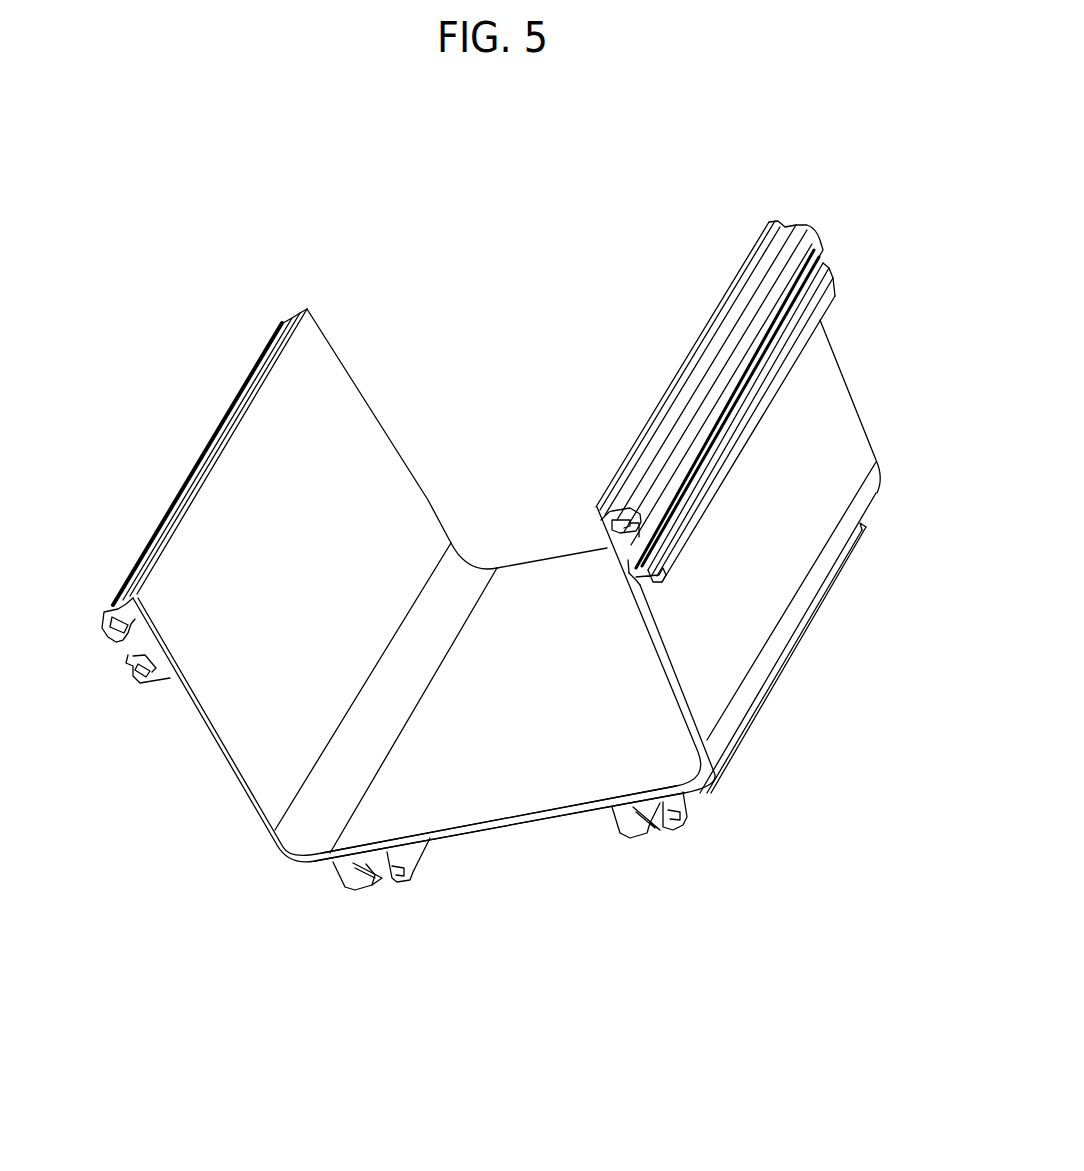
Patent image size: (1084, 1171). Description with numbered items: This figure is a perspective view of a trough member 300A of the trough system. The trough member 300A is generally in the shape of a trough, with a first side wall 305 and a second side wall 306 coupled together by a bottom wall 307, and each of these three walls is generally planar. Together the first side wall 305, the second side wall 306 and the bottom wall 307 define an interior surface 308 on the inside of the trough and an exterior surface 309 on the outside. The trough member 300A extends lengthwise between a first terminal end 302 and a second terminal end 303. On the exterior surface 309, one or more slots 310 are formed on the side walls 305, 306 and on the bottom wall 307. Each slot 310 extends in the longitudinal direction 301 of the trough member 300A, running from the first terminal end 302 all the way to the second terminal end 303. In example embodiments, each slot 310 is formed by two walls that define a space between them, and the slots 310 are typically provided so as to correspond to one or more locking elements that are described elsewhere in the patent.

The trough member 300A is at (820, 183).
The longitudinal direction 301 is at (636, 402).
The first terminal end 302 is at (515, 833).
The second terminal end 303 is at (515, 563).
The first side wall 305 is at (813, 503).
The second side wall 306 is at (313, 415).
The bottom wall 307 is at (605, 642).
The interior surface 308 is at (504, 762).
The exterior surface 309 is at (813, 441).
The slot 310 is at (672, 543).